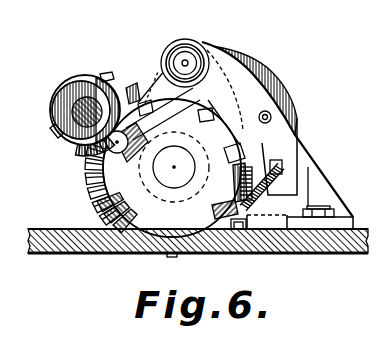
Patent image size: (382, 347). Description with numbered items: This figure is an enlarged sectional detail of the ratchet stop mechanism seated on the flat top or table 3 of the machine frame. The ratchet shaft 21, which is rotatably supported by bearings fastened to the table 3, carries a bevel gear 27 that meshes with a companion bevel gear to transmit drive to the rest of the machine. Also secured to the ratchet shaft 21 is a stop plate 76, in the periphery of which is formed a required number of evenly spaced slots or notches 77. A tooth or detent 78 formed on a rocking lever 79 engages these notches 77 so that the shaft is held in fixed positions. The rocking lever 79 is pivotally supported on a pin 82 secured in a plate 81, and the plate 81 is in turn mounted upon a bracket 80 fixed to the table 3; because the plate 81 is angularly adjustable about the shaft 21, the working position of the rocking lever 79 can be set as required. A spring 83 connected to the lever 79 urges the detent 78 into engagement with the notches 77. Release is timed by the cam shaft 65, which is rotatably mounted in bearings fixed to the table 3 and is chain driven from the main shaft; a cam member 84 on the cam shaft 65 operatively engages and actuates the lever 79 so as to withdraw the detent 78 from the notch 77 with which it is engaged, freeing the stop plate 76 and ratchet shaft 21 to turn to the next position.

The table 3 is at (50, 237).
The ratchet shaft 21 is at (174, 167).
The bevel gear 27 is at (90, 184).
The cam shaft 65 is at (68, 101).
The stop plate 76 is at (127, 213).
The notches 77 is at (213, 206).
The detent 78 is at (231, 181).
The rocking lever 79 is at (225, 80).
The bracket 80 is at (298, 150).
The plate 81 is at (280, 96).
The pin 82 is at (182, 63).
The spring 83 is at (265, 186).
The cam member 84 is at (70, 137).